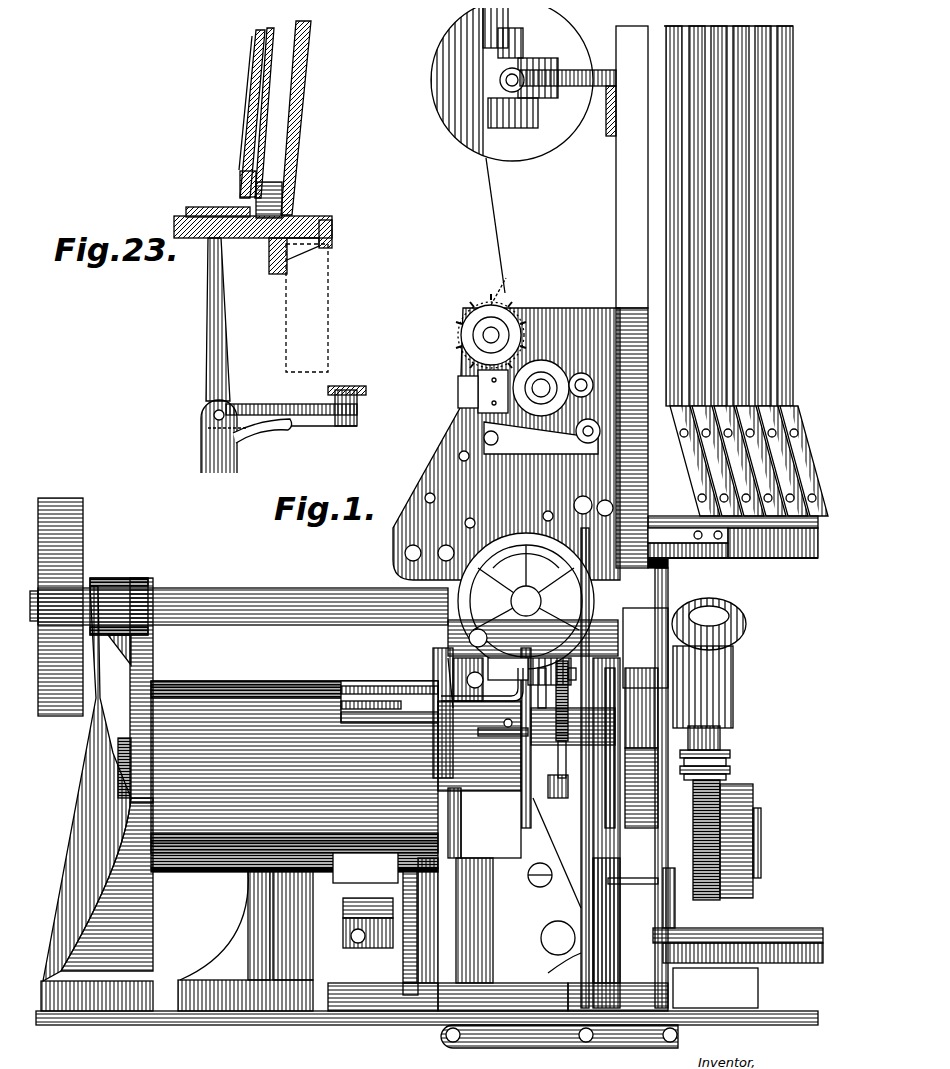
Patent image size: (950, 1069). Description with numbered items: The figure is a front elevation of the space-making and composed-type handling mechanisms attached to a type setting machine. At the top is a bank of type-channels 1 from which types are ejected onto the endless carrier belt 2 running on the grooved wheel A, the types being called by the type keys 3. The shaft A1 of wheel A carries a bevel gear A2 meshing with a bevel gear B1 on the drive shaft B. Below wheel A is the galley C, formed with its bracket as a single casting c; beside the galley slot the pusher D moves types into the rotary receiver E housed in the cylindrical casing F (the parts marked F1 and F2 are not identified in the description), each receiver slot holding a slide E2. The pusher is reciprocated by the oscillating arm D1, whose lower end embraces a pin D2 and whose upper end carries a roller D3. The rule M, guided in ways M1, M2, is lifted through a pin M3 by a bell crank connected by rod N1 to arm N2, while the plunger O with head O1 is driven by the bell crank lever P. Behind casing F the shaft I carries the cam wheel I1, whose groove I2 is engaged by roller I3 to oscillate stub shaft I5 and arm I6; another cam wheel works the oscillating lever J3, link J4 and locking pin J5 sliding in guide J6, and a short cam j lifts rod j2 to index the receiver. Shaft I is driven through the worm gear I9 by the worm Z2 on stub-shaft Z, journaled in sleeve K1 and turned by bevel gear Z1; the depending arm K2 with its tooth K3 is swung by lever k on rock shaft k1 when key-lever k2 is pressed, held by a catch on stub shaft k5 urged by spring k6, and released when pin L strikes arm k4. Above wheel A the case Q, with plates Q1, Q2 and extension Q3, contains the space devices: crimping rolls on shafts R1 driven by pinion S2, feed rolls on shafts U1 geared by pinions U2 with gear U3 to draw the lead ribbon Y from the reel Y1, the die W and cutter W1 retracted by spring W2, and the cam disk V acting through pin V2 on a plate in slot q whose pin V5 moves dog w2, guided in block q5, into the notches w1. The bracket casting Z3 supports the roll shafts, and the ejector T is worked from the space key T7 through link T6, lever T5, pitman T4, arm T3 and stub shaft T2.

In FIG. 23, the bank of type-channels 1 is at (298, 100).
In FIG. 1, the bank of type-channels 1 is at (770, 180).
In FIG. 23, the endless type carrier belt 2 is at (302, 232).
In FIG. 1, the endless type carrier belt 2 is at (693, 598).
In FIG. 23, the type keys 3 is at (349, 400).
In FIG. 23, the grooved belt wheel A is at (278, 319).
In FIG. 1, the grooved belt wheel A is at (605, 541).
In FIG. 1, the reel Y1 is at (523, 88).
In FIG. 1, the strip of soft metal Y is at (492, 248).
In FIG. 1, the metal case Q is at (425, 470).
In FIG. 1, the pinion S2 is at (448, 440).
In FIG. 1, the crimping roll shafts R1 is at (397, 545).
In FIG. 1, the feed roll shafts U1 is at (465, 327).
In FIG. 1, the gear U3 is at (450, 320).
In FIG. 1, the female cutter die W is at (516, 289).
In FIG. 1, the cutter W1 is at (462, 302).
In FIG. 1, the spring W2 is at (580, 330).
In FIG. 1, the pinions U2 is at (530, 330).
In FIG. 1, the plate Q1 is at (600, 322).
In FIG. 1, the cam disk V is at (573, 366).
In FIG. 1, the pin V5 is at (542, 436).
In FIG. 1, the block q5 is at (493, 391).
In FIG. 1, the plate Q2 is at (450, 375).
In FIG. 1, the spring actuated dog w2 is at (502, 358).
In FIG. 1, the notches w1 is at (452, 358).
In FIG. 1, the pin V2 is at (462, 416).
In FIG. 1, the slot q is at (522, 444).
In FIG. 1, the ejector T is at (642, 410).
In FIG. 1, the short arm T3 is at (576, 489).
In FIG. 1, the stub shaft T2 is at (603, 490).
In FIG. 1, the shaft A1 is at (526, 601).
In FIG. 1, the bevel gear A2 is at (540, 570).
In FIG. 1, the bevel gear B1 is at (469, 538).
In FIG. 1, the shaft B is at (352, 572).
In FIG. 1, the cylindrical casing F is at (302, 673).
In FIG. 1, the type-line receiver E is at (338, 676).
In FIG. 1, the slide E2 is at (352, 680).
In FIG. 1, the grooved way M1 is at (428, 680).
In FIG. 1, the cylinder end F1 is at (352, 672).
In FIG. 1, the cylinder flange F2 is at (378, 737).
In FIG. 1, the downward extension Q3 is at (432, 713).
In FIG. 1, the pin D2 is at (460, 612).
In FIG. 1, the roller D3 is at (452, 625).
In FIG. 1, the oscillating arm D1 is at (440, 650).
In FIG. 1, the pusher D is at (468, 703).
In FIG. 1, the grooved way M2 is at (524, 658).
In FIG. 1, the arm N2 is at (585, 757).
In FIG. 1, the rod N1 is at (553, 714).
In FIG. 1, the head end O1 is at (482, 696).
In FIG. 1, the plunger O is at (512, 717).
In FIG. 1, the bell crank lever P is at (495, 707).
In FIG. 1, the rule M is at (497, 744).
In FIG. 1, the pin M3 is at (501, 737).
In FIG. 1, the pitman rod T4 is at (594, 768).
In FIG. 1, the cam wheel I1 is at (606, 833).
In FIG. 1, the bracket casting Z3 is at (640, 662).
In FIG. 1, the bevel gear Z1 is at (738, 618).
In FIG. 1, the sleeve K1 is at (728, 670).
In FIG. 1, the arm K2 is at (668, 720).
In FIG. 1, the stub-shaft Z is at (714, 724).
In FIG. 1, the worm Z2 is at (722, 750).
In FIG. 1, the shaft I is at (750, 816).
In FIG. 1, the tooth K3 is at (751, 819).
In FIG. 1, the worm gear I9 is at (716, 886).
In FIG. 1, the space key T7 is at (742, 932).
In FIG. 1, the link T6 is at (690, 985).
In FIG. 1, the lever k is at (690, 912).
In FIG. 1, the spring k6 is at (681, 902).
In FIG. 1, the key-lever k2 is at (641, 919).
In FIG. 1, the pin L is at (633, 886).
In FIG. 1, the arm k4 is at (610, 817).
In FIG. 1, the stub shaft k5 is at (645, 837).
In FIG. 1, the cam-roller I3 is at (557, 853).
In FIG. 1, the galley C is at (484, 823).
In FIG. 1, the arm I6 is at (537, 892).
In FIG. 1, the drunken-cam groove I2 is at (553, 912).
In FIG. 1, the stub shaft I5 is at (546, 938).
In FIG. 1, the rock shaft k1 is at (562, 964).
In FIG. 1, the guide J6 is at (365, 868).
In FIG. 1, the locking pin J5 is at (357, 908).
In FIG. 1, the link J4 is at (358, 936).
In FIG. 1, the oscillating lever J3 is at (356, 962).
In FIG. 1, the casting c is at (419, 925).
In FIG. 1, the short cam j is at (432, 920).
In FIG. 1, the rod j2 is at (408, 991).
In FIG. 1, the horizontal lever T5 is at (559, 1036).